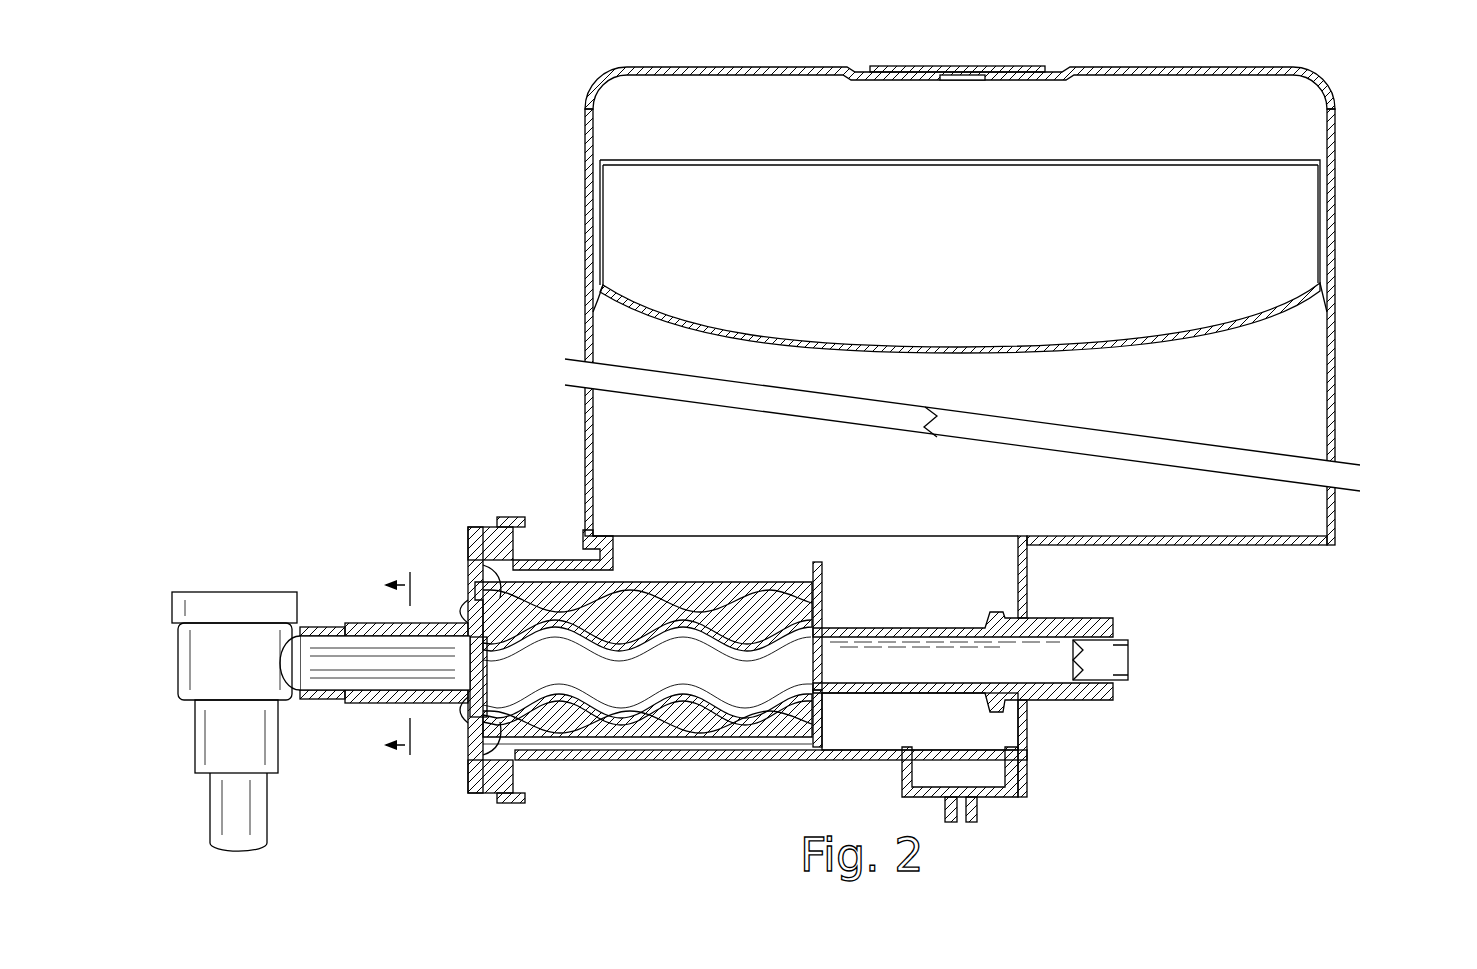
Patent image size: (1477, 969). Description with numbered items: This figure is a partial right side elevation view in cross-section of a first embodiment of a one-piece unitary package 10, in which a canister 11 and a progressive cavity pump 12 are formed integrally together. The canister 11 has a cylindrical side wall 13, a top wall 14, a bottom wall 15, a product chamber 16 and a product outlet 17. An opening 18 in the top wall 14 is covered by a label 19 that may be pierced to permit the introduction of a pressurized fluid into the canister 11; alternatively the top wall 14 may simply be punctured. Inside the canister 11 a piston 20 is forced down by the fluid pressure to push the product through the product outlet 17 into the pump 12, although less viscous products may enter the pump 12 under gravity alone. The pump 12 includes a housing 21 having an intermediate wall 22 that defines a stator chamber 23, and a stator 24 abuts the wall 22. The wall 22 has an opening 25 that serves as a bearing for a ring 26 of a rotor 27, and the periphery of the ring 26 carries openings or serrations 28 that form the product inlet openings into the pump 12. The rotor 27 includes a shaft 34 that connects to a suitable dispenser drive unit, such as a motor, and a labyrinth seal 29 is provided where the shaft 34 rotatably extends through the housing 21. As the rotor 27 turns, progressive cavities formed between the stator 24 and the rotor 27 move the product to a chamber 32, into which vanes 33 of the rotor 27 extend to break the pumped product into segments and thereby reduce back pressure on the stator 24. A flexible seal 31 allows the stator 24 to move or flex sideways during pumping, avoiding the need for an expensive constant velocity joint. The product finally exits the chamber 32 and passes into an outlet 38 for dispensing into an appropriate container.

The one-piece unitary package 10 is at (1392, 115).
The canister 11 is at (572, 251).
The progressive cavity pump 12 is at (663, 764).
The cylindrical side wall 13 is at (582, 462).
The top wall 14 is at (737, 67).
The bottom wall 15 is at (1186, 546).
The product chamber 16 is at (955, 495).
The product outlet 17 is at (946, 538).
The opening 18 is at (976, 82).
The label 19 is at (917, 66).
The piston 20 is at (955, 337).
The housing 21 is at (773, 762).
The intermediate wall 22 is at (826, 748).
The stator chamber 23 is at (600, 757).
The stator 24 is at (722, 742).
The opening 25 is at (823, 618).
The ring 26 is at (822, 626).
The rotor 27 is at (640, 632).
The openings or serrations 28 is at (826, 712).
The labyrinth seal 29 is at (994, 679).
The flexible seal 31 is at (459, 660).
The chamber 32 is at (318, 632).
The vanes 33 is at (328, 682).
The shaft 34 is at (1075, 666).
The outlet 38 is at (218, 732).